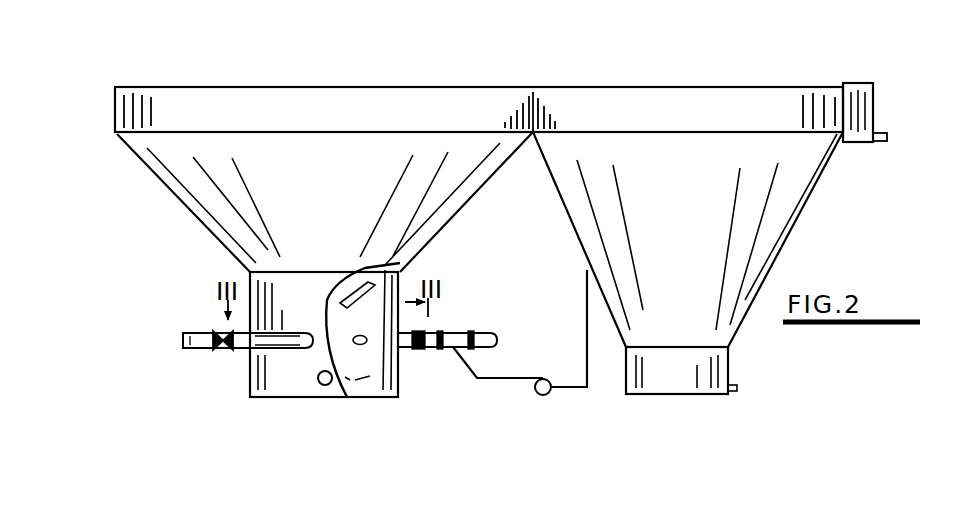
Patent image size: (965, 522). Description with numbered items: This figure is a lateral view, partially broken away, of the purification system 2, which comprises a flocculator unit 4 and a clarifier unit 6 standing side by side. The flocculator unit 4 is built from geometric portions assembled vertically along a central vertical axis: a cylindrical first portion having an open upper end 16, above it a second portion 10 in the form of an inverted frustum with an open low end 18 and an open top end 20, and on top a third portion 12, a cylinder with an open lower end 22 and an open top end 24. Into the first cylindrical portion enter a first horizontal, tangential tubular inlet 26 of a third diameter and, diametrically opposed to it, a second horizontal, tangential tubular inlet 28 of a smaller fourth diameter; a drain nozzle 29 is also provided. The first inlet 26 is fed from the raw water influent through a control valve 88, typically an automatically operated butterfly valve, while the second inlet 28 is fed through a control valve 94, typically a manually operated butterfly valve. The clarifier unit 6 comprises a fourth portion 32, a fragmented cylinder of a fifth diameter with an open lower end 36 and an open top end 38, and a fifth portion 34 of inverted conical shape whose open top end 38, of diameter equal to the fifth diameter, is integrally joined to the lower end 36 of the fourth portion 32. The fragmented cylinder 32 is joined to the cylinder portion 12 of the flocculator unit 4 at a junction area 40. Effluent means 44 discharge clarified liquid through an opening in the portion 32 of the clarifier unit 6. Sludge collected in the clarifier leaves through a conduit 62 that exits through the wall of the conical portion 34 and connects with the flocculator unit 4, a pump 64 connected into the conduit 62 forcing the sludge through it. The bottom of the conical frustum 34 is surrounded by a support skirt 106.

The purification system 2 is at (414, 87).
The flocculator unit 4 is at (334, 91).
The clarifier unit 6 is at (681, 86).
The second portion 10 is at (448, 203).
The third portion 12 is at (252, 93).
The open upper end 16 is at (290, 280).
The open low end 18 is at (247, 267).
The open top end 20 is at (150, 173).
The open lower end 22 is at (325, 202).
The open top end 24 is at (178, 93).
The first tubular inlet 26 is at (235, 345).
The second tubular inlet 28 is at (407, 347).
The drain nozzle 29 is at (303, 371).
The fourth portion 32 is at (757, 95).
The fifth portion 34 is at (780, 215).
The open lower end 36 is at (670, 122).
The open top end 38 is at (627, 93).
The junction area 40 is at (541, 86).
The effluent means 44 is at (853, 82).
The conduit 62 is at (583, 323).
The pump 64 is at (551, 378).
The control valve 88 is at (214, 346).
The control valve 94 is at (422, 333).
The support skirt 106 is at (722, 374).